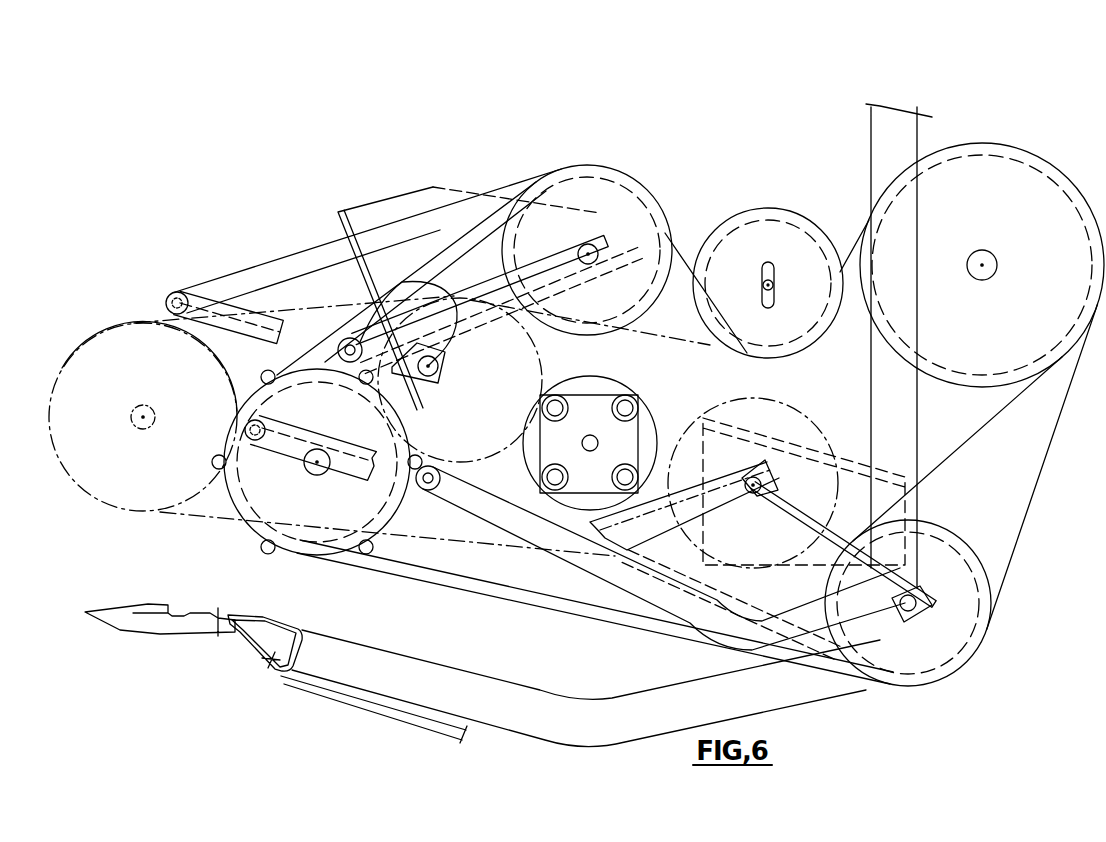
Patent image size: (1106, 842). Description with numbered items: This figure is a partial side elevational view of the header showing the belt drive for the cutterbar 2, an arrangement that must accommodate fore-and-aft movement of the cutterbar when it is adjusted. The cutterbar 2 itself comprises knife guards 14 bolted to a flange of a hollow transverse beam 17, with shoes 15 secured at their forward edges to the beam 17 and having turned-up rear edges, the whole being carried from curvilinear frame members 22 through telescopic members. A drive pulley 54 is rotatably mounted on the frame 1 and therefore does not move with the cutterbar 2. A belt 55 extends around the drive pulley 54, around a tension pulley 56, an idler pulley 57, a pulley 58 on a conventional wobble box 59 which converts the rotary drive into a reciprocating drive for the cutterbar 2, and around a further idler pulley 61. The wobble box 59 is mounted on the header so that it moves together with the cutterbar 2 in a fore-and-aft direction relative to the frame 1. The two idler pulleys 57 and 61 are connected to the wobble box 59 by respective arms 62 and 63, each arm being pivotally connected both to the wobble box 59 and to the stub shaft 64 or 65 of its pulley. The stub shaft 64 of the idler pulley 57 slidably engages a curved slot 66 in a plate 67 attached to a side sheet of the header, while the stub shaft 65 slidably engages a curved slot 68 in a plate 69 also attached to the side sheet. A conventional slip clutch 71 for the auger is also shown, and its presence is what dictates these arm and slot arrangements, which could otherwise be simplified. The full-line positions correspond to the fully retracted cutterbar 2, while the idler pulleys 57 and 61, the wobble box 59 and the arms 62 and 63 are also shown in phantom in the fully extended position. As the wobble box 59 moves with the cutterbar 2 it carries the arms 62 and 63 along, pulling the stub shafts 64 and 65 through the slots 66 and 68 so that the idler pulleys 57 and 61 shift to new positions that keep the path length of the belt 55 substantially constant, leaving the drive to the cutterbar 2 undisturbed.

The frame 1 is at (903, 103).
The cutterbar 2 is at (190, 640).
The knife guards 14 is at (144, 633).
The shoes 15 is at (376, 716).
The hollow transverse beam 17 is at (290, 620).
The curvilinear frame members 22 is at (582, 700).
The drive pulley 54 is at (1062, 180).
The belt 55 is at (328, 330).
The tension pulley 56 is at (786, 210).
The idler pulley 57 is at (632, 208).
The pulley 58 is at (180, 514).
The wobble box 59 is at (108, 486).
The further idler pulley 61 is at (752, 398).
The arm 62 is at (214, 296).
The arm 63 is at (740, 620).
The stub shaft 64 is at (602, 257).
The stub shaft 65 is at (748, 480).
The curved slot 66 is at (456, 338).
The plate 67 is at (376, 206).
The curved slot 68 is at (800, 522).
The plate 69 is at (854, 452).
The slip clutch 71 is at (604, 390).